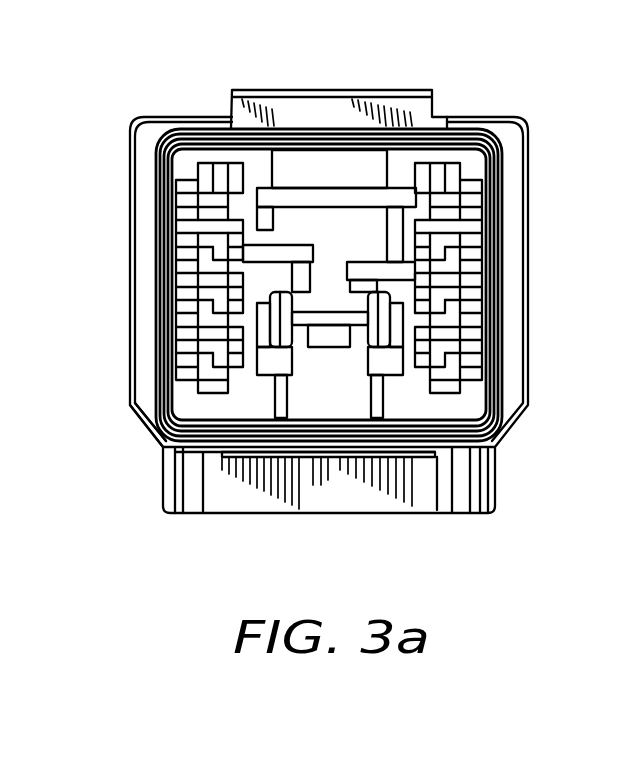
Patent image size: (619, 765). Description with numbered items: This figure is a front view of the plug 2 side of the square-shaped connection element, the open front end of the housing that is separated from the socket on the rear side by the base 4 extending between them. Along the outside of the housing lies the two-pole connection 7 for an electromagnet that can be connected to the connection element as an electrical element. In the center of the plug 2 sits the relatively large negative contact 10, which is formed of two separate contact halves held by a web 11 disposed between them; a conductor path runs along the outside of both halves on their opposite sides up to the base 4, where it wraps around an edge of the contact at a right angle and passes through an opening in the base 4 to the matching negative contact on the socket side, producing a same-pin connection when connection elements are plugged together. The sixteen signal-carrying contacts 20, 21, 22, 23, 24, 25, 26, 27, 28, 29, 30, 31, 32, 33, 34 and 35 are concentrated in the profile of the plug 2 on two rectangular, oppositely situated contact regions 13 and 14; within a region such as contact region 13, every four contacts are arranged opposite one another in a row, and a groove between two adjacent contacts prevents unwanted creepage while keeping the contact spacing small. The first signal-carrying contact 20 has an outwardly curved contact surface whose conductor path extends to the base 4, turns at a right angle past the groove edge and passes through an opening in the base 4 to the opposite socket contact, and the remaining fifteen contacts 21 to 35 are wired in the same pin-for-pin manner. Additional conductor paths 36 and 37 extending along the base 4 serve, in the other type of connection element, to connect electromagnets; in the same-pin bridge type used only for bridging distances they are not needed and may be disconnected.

The plug 2 is at (412, 107).
The base 4 is at (255, 392).
The two-pole connection 7 is at (425, 462).
The negative contact 10 is at (372, 338).
The web 11 is at (330, 316).
The contact region 13 is at (212, 372).
The contact region 14 is at (497, 447).
The first signal-carrying contact 20 is at (220, 257).
The signal-carrying contact 21 is at (218, 315).
The signal-carrying contact 22 is at (165, 442).
The signal-carrying contact 23 is at (193, 370).
The signal-carrying contact 24 is at (190, 308).
The signal-carrying contact 25 is at (188, 258).
The signal-carrying contact 26 is at (185, 200).
The signal-carrying contact 27 is at (222, 197).
The signal-carrying contact 28 is at (450, 183).
The signal-carrying contact 29 is at (465, 195).
The signal-carrying contact 30 is at (462, 253).
The signal-carrying contact 31 is at (463, 310).
The signal-carrying contact 32 is at (465, 366).
The signal-carrying contact 33 is at (442, 378).
The signal-carrying contact 34 is at (440, 307).
The signal-carrying contact 35 is at (440, 252).
The additional conductor path 36 is at (300, 257).
The additional conductor path 37 is at (362, 197).